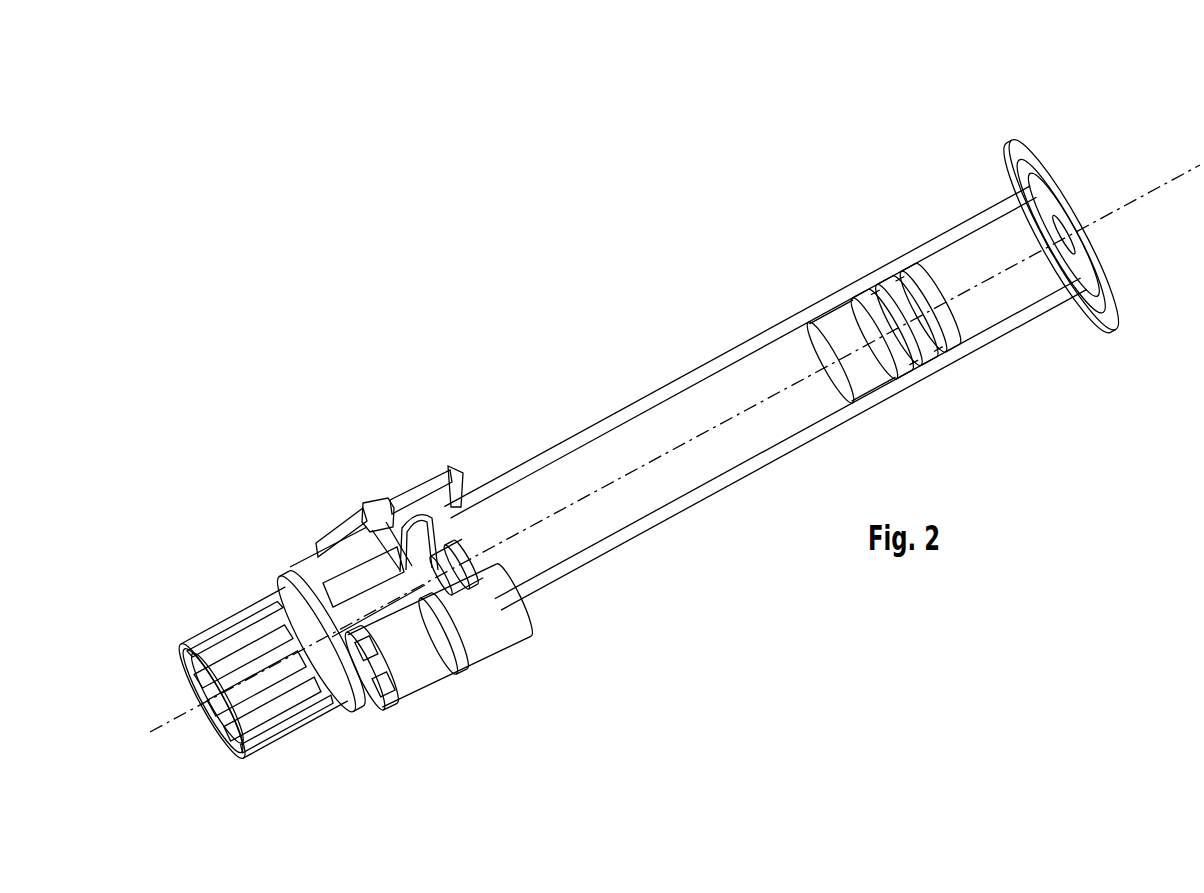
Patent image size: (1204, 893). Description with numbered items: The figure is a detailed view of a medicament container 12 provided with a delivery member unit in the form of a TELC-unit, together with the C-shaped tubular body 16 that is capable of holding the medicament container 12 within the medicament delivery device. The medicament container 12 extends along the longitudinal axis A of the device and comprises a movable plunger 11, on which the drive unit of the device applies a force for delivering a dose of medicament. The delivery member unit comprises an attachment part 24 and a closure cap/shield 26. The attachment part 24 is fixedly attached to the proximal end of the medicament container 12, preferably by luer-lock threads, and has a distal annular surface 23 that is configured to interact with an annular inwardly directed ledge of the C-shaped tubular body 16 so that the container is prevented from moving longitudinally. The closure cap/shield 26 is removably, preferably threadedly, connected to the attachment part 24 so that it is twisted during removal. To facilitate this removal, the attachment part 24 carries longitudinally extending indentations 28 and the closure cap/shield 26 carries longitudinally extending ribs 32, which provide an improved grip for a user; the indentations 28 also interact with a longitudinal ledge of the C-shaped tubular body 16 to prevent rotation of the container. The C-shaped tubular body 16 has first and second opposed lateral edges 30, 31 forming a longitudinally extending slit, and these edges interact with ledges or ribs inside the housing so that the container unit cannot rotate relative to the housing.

The movable plunger 11 is at (834, 318).
The medicament container 12 is at (675, 491).
The C-shaped tubular body 16 is at (506, 645).
The distal annular surface 23 is at (388, 512).
The attachment part 24 is at (313, 582).
The closure cap/shield 26 is at (190, 641).
The longitudinally extending indentations 28 is at (374, 563).
The first lateral edge 30 is at (446, 490).
The second lateral edge 31 is at (500, 562).
The ribs 32 is at (248, 622).
The longitudinal axis A is at (1122, 203).